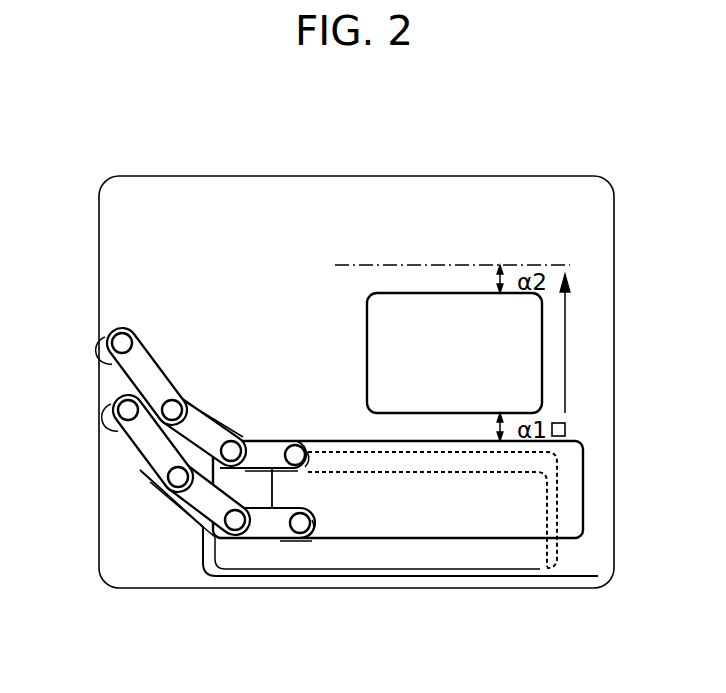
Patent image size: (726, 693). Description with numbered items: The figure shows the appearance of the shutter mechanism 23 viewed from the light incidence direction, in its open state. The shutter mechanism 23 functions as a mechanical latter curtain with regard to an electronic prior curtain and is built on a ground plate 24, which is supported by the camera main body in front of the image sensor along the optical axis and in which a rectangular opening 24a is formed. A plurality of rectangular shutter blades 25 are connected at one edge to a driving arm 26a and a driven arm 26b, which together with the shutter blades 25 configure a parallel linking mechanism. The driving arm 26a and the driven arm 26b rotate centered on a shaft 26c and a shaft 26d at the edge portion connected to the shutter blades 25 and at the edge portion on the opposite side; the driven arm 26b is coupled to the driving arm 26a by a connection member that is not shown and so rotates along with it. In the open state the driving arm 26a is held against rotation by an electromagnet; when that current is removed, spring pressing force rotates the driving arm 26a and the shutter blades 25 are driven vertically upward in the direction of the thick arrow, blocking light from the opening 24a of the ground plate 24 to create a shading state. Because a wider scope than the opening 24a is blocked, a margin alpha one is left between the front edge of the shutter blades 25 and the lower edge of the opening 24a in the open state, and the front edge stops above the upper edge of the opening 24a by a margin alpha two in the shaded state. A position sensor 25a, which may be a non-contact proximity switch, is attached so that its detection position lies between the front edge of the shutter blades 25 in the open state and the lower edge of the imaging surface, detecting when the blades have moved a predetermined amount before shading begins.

The shutter mechanism 23 is at (548, 157).
The ground plate 24 is at (403, 176).
The opening 24a is at (367, 349).
The shutter blades 25 is at (585, 522).
The position sensor 25a is at (566, 430).
The driving arm 26a is at (127, 440).
The driven arm 26b is at (117, 370).
The shaft 26c is at (113, 408).
The shaft 26d is at (107, 338).